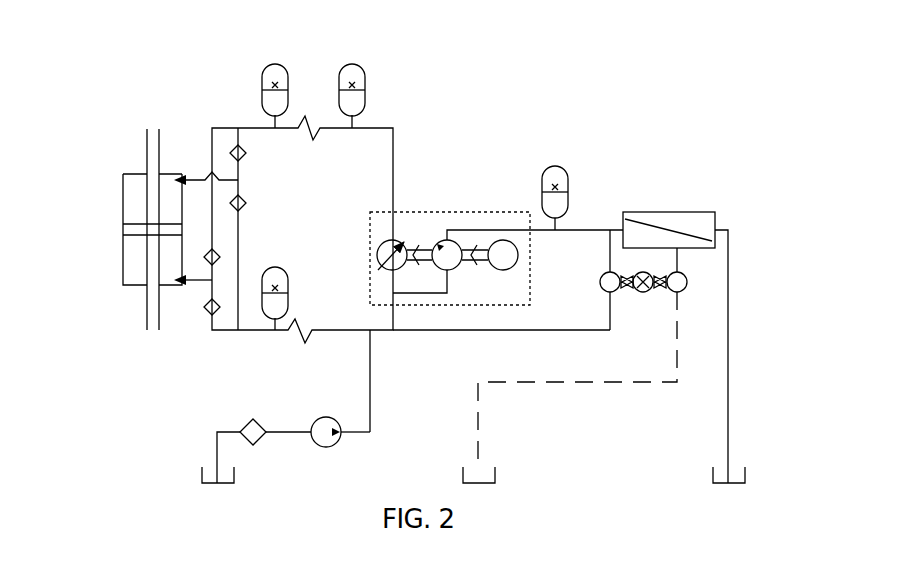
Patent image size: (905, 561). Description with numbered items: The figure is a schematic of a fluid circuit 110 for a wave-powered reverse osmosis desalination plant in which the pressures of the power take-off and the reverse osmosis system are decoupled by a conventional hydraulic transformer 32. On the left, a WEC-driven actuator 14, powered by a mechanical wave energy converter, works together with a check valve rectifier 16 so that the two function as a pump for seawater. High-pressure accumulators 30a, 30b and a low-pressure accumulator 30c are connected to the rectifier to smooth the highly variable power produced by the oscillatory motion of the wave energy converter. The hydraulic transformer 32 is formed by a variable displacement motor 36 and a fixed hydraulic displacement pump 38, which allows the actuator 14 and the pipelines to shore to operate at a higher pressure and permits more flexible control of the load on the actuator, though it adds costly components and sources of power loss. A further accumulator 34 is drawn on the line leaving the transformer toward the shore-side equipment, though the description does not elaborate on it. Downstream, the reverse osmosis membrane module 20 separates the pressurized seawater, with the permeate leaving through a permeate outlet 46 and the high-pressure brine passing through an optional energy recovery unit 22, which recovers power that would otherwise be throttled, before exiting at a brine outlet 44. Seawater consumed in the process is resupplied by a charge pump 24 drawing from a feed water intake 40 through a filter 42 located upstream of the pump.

The WEC-driven actuator 14 is at (112, 175).
The check valve rectifier 16 is at (255, 197).
The reverse osmosis membrane module 20 is at (710, 206).
The energy recovery unit 22 is at (648, 294).
The charge pump 24 is at (331, 452).
The high-pressure accumulator 30a is at (290, 70).
The high-pressure accumulator 30b is at (368, 84).
The low-pressure accumulator 30c is at (292, 292).
The hydraulic transformer 32 is at (462, 218).
The accumulator 34 is at (569, 192).
The variable displacement motor 36 is at (367, 257).
The fixed hydraulic displacement pump 38 is at (463, 235).
The feed water intake 40 is at (198, 478).
The filter 42 is at (245, 423).
The brine outlet 44 is at (462, 470).
The permeate outlet 46 is at (712, 468).
The fluid circuit 110 is at (717, 145).